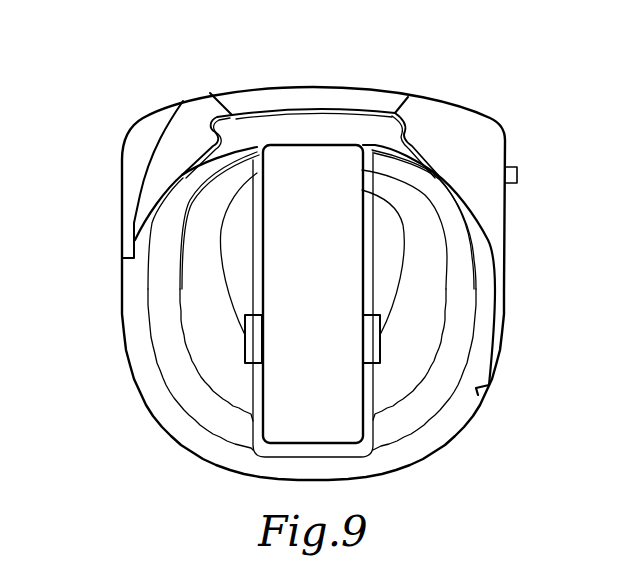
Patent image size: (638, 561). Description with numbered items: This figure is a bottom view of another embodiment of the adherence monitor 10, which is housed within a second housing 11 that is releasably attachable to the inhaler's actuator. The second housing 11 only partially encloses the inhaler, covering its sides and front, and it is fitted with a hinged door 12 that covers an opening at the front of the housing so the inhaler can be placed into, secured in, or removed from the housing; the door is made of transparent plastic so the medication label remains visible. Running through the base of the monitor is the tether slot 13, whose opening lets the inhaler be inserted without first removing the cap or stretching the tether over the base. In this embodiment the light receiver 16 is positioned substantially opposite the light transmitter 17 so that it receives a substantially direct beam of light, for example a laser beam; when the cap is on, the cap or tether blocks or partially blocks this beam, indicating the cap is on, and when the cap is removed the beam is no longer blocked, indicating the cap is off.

The adherence monitor 10 is at (284, 248).
The second housing 11 is at (438, 447).
The hinged door 12 is at (425, 96).
The tether slot 13 is at (300, 140).
The light receiver 16 is at (380, 350).
The light transmitter 17 is at (245, 345).